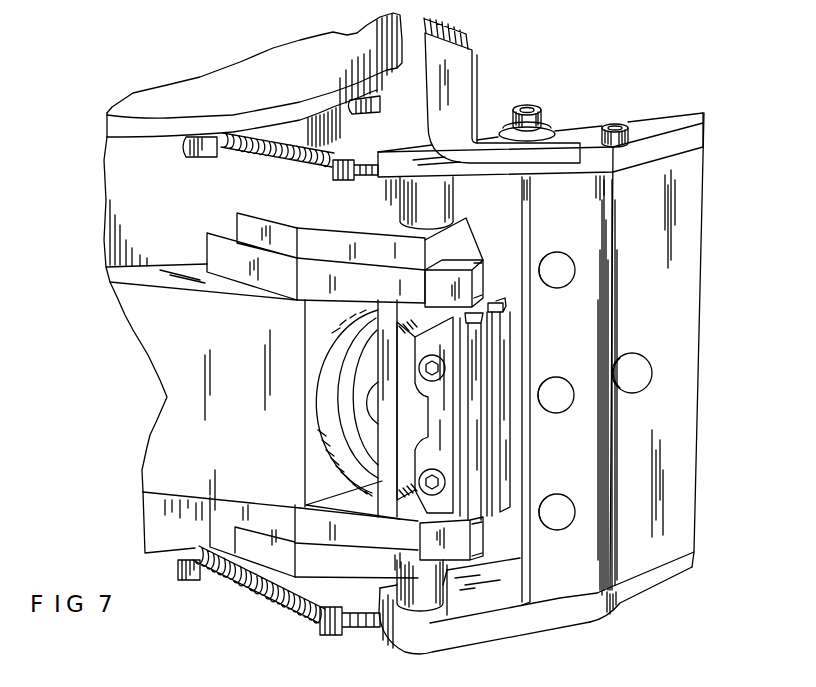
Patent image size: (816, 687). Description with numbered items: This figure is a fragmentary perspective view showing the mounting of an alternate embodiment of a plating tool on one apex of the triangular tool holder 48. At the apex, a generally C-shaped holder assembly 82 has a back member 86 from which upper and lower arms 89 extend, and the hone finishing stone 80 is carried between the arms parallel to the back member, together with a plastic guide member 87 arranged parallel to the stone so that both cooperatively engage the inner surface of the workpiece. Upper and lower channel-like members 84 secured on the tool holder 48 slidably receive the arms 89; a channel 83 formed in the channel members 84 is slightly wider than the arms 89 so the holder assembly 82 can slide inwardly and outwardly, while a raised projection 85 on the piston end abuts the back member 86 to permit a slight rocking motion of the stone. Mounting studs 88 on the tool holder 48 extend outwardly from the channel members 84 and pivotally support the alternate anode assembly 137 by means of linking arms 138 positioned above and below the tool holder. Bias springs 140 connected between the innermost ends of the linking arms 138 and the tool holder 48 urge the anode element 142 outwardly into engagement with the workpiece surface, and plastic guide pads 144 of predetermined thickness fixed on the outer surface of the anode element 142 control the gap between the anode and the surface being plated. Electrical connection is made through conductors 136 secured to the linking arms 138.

The tool holder 48 is at (173, 468).
The hone finishing stone 80 is at (507, 348).
The holder assembly 82 is at (493, 300).
The channel 83 is at (456, 256).
The channel-like member 84 is at (308, 288).
The raised projection 85 is at (372, 405).
The back member 86 is at (387, 490).
The plastic guide member 87 is at (481, 473).
The mounting stud 88 is at (397, 213).
The arm 89 is at (482, 270).
The conductor 136 is at (467, 28).
The alternate anode assembly 137 is at (708, 178).
The linking arm 138 is at (593, 132).
The bias spring 140 is at (254, 156).
The anode element 142 is at (698, 380).
The plastic guide pad 144 is at (572, 240).